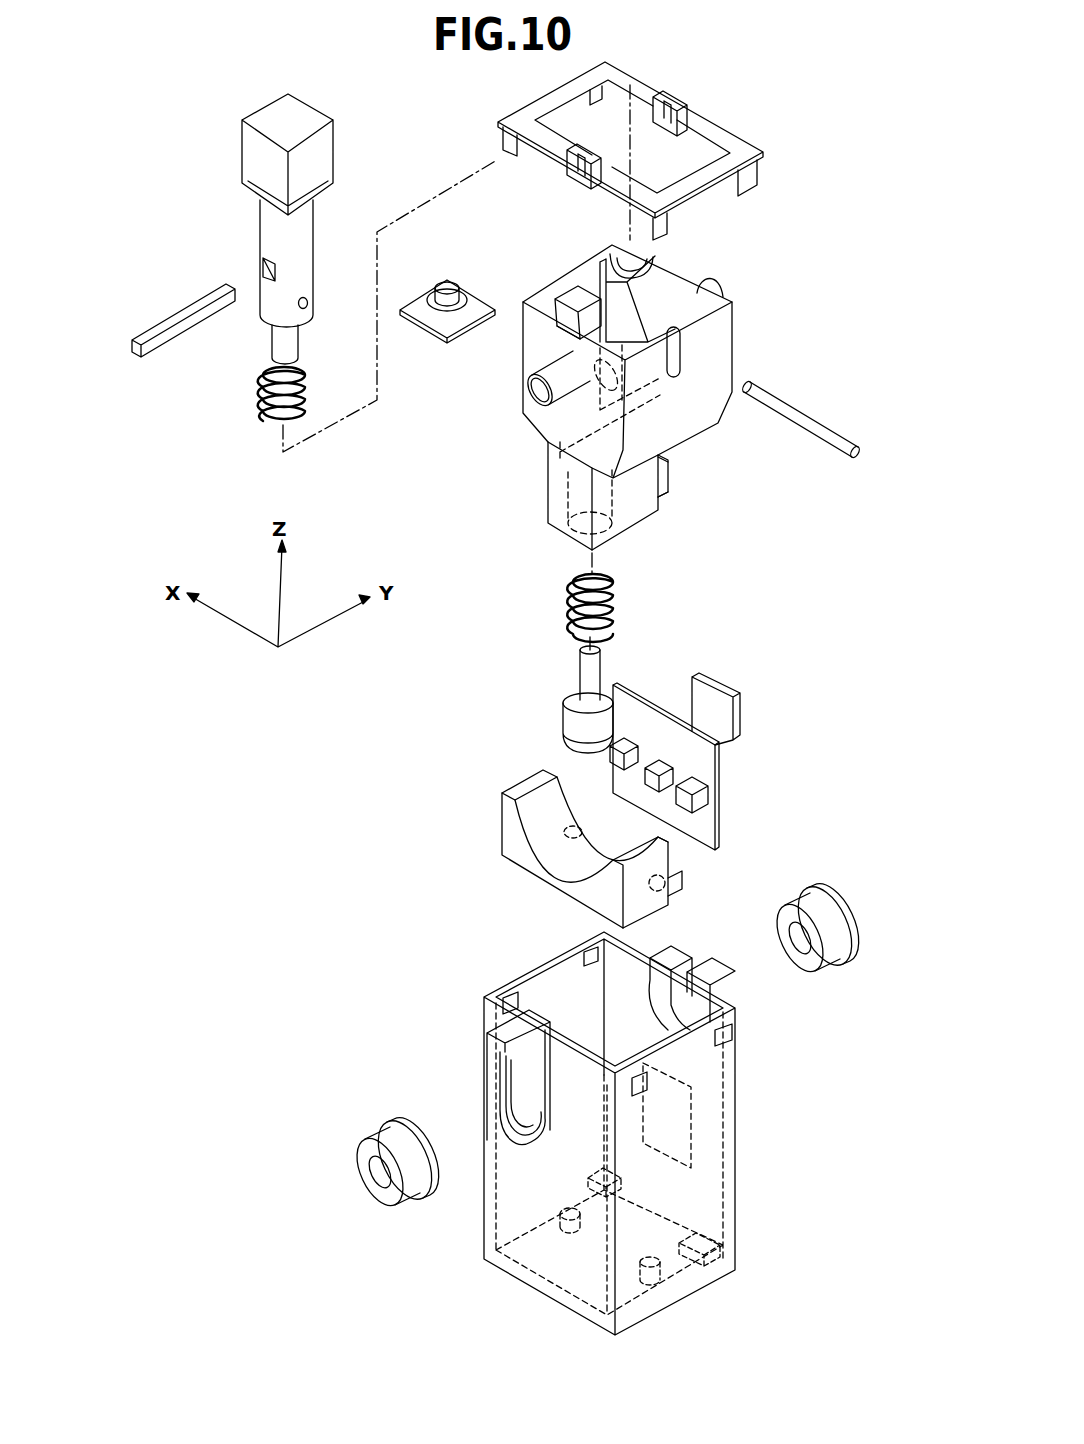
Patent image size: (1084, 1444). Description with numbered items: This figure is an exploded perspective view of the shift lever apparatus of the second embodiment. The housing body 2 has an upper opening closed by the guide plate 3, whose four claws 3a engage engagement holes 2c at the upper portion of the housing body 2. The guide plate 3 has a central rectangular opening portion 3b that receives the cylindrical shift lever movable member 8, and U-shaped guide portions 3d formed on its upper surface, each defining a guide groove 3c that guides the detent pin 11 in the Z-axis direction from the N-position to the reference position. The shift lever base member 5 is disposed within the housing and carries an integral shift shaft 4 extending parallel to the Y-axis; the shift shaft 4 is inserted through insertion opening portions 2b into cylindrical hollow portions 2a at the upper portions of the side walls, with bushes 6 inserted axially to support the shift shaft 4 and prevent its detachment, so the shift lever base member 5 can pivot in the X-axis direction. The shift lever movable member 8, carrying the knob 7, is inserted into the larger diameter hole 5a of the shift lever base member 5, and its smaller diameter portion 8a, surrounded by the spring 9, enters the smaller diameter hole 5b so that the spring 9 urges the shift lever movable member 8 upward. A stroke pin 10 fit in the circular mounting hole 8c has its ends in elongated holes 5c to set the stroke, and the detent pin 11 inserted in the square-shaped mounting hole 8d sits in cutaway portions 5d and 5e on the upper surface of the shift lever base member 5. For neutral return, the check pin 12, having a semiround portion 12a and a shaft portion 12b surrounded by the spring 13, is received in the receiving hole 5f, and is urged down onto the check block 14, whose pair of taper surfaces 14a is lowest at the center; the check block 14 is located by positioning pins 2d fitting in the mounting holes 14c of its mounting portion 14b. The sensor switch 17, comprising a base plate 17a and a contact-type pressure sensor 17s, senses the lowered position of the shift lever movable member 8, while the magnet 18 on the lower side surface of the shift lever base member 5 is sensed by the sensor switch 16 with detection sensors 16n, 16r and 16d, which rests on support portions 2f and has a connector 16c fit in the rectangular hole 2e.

The housing body 2 is at (638, 1142).
The cylindrical hollow portion 2a is at (736, 991).
The insertion opening portion 2b is at (514, 1052).
The engagement hole 2c is at (583, 957).
The positioning pin 2d is at (565, 1232).
The rectangular hole 2e is at (693, 1111).
The support portion 2f is at (603, 1198).
The guide plate 3 is at (655, 152).
The claw 3a is at (505, 143).
The rectangular opening portion 3b is at (643, 177).
The guide groove 3c is at (678, 92).
The U-shaped guide portion 3d is at (690, 110).
The shift shaft 4 is at (723, 288).
The shift lever base member 5 is at (625, 401).
The larger diameter hole 5a is at (612, 262).
The smaller diameter hole 5b is at (632, 397).
The elongated hole 5c is at (676, 374).
The cutaway portion 5d is at (592, 292).
The cutaway portion 5e is at (567, 323).
The receiving hole 5f is at (553, 503).
The bush 6 is at (403, 1140).
The knob 7 is at (326, 143).
The shift lever movable member 8 is at (247, 279).
The smaller diameter portion 8a is at (266, 350).
The circular mounting hole 8c is at (308, 304).
The square-shaped mounting hole 8d is at (276, 272).
The spring 9 is at (263, 395).
The stroke pin 10 is at (813, 412).
The detent pin 11 is at (164, 320).
The check pin 12 is at (545, 705).
The semiround portion 12a is at (570, 740).
The shaft portion 12b is at (582, 677).
The spring 13 is at (613, 610).
The check block 14 is at (609, 857).
The taper surface 14a is at (532, 830).
The mounting portion 14b is at (660, 888).
The mounting hole 14c is at (684, 888).
The sensor switch 16 is at (740, 742).
The connector 16c is at (722, 717).
The detection sensor 16d is at (702, 800).
The detection sensor 16n is at (657, 757).
The detection sensor 16r is at (623, 733).
The sensor switch 17 is at (430, 381).
The base plate 17a is at (455, 323).
The pressure sensor 17s is at (440, 310).
The magnet 18 is at (662, 493).